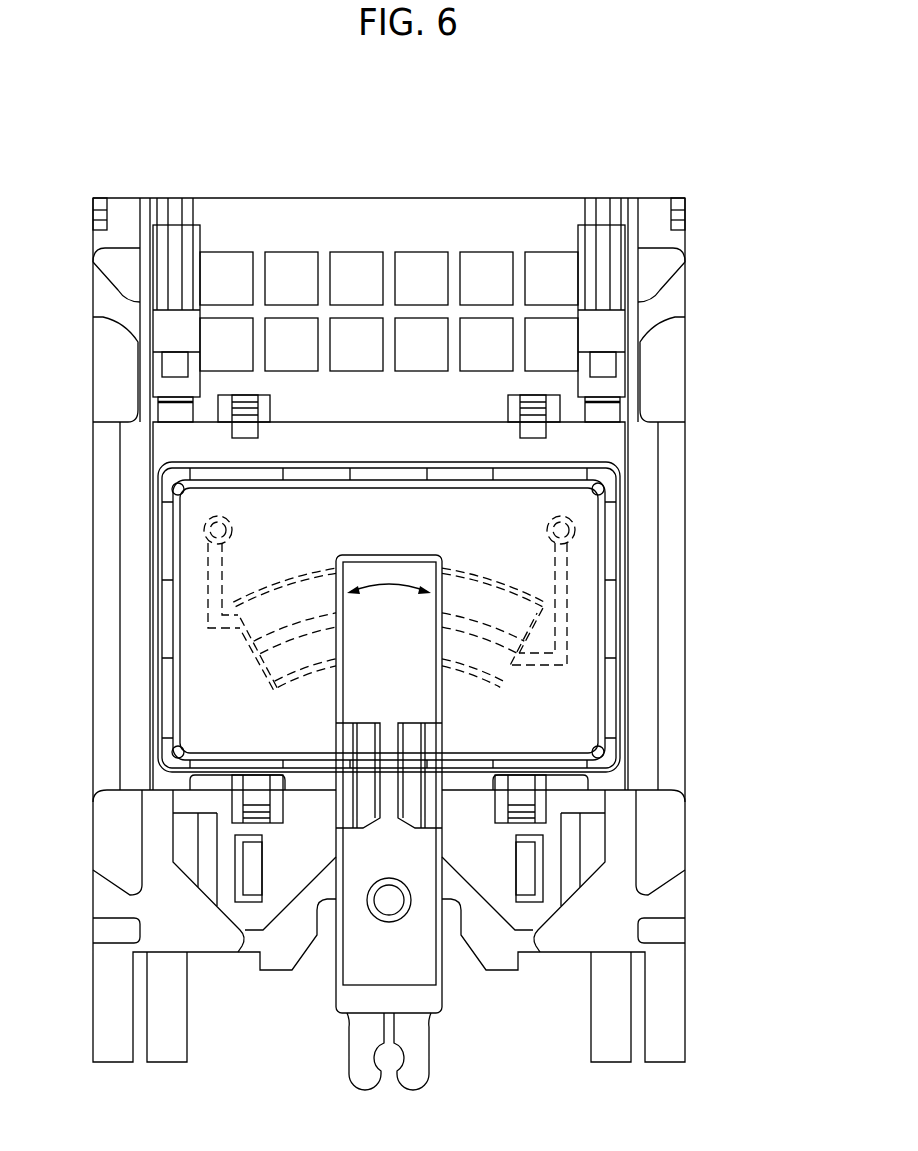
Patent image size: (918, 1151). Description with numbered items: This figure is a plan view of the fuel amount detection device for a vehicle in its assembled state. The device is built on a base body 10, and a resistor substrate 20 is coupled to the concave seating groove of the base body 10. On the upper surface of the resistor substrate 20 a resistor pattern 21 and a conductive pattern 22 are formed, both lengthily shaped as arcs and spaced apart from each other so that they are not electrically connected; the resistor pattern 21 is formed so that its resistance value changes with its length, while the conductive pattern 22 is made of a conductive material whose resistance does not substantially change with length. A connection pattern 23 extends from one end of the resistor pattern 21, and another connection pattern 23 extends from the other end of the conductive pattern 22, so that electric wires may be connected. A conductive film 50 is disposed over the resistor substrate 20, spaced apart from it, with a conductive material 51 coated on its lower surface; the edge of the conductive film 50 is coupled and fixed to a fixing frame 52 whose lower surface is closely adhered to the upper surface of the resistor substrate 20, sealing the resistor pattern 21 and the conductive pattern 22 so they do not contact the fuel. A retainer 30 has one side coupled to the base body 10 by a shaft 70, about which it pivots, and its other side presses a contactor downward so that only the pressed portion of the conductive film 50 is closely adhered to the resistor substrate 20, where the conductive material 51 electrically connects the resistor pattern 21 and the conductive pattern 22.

The base body 10 is at (455, 200).
The resistor substrate 20 is at (624, 448).
The resistor pattern 21 is at (535, 613).
The conductive pattern 22 is at (483, 673).
The connection pattern 23 is at (210, 567).
The retainer 30 is at (450, 980).
The conductive film 50 is at (588, 539).
The conductive material 51 is at (497, 687).
The fixing frame 52 is at (618, 683).
The shaft 70 is at (378, 925).